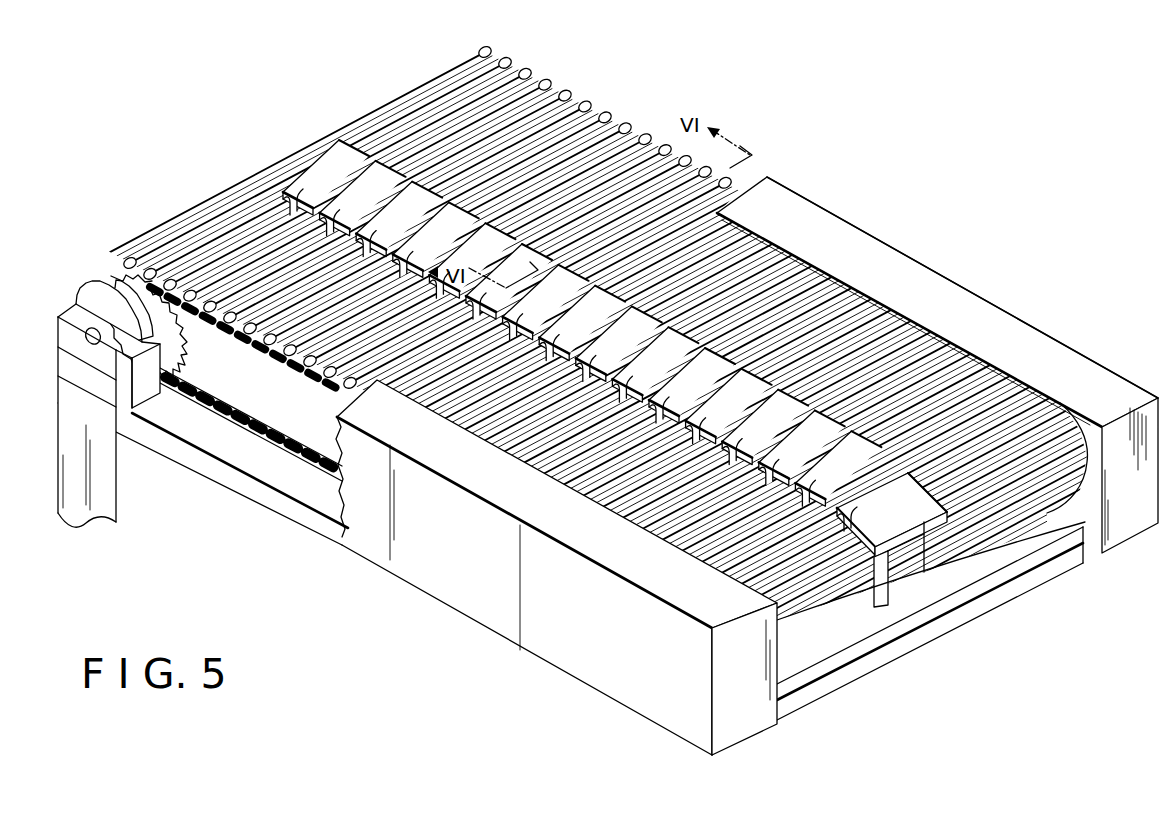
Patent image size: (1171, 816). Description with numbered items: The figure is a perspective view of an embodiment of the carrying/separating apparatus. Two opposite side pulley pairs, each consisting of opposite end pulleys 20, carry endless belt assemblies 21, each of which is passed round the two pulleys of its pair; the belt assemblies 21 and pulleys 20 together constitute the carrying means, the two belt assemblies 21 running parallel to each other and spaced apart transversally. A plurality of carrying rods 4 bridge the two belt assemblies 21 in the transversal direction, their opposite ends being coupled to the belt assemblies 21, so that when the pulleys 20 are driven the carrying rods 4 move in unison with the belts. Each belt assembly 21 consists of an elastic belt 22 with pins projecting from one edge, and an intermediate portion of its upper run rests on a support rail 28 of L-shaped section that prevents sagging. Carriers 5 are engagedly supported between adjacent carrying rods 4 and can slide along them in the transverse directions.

The carrying rod 4 is at (403, 127).
The carrier 5 is at (333, 177).
The pulley 20 is at (186, 366).
The belt assembly 21 is at (76, 262).
The belt 22 is at (88, 288).
The support rail 28 is at (263, 390).